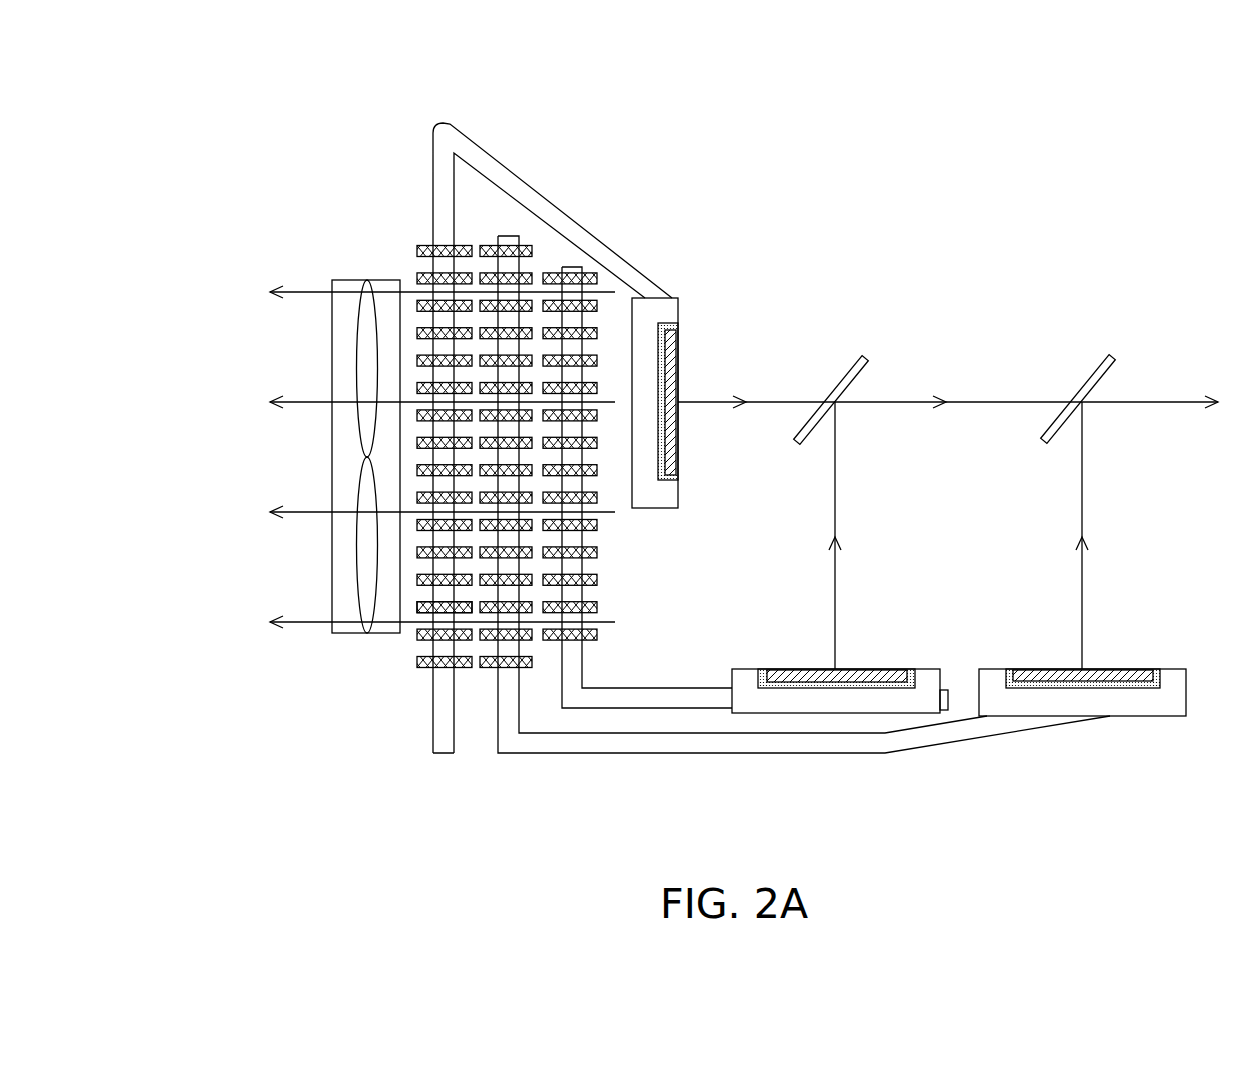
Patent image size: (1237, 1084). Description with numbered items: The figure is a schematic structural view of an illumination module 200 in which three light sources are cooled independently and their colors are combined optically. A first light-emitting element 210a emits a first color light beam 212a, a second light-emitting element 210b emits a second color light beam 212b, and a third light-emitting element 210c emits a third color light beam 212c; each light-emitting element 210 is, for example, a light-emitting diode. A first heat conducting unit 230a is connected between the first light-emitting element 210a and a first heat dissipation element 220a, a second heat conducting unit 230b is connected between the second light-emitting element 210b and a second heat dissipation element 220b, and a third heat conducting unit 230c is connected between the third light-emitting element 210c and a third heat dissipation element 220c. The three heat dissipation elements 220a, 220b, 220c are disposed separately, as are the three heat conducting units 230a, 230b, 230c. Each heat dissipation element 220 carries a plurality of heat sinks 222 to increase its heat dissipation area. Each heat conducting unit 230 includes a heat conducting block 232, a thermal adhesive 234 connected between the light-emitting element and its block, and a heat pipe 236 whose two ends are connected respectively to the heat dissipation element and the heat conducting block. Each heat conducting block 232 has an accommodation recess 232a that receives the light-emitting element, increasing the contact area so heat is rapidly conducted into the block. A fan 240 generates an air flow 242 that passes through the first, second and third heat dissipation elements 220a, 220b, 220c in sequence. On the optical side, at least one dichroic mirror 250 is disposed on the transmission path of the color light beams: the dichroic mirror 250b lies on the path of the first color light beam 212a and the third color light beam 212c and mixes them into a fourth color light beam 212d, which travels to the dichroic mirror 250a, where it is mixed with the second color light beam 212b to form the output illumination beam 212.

The illumination module 200 is at (1220, 838).
The light-emitting element 210 is at (909, 507).
The first light-emitting element 210a is at (790, 672).
The second light-emitting element 210b is at (1043, 675).
The third light-emitting element 210c is at (680, 438).
The illumination beam 212 is at (1172, 400).
The first color light beam 212a is at (837, 578).
The second color light beam 212b is at (1083, 578).
The third color light beam 212c is at (783, 398).
The fourth color light beam 212d is at (920, 406).
The heat dissipation element 220 is at (392, 523).
The first heat dissipation element 220a is at (553, 640).
The second heat dissipation element 220b is at (493, 668).
The third heat dissipation element 220c is at (430, 668).
The heat sink 222 is at (421, 613).
The heat conducting unit 230 is at (771, 486).
The first heat conducting unit 230a is at (755, 558).
The second heat conducting unit 230b is at (550, 764).
The third heat conducting unit 230c is at (598, 205).
The heat conducting block 232 is at (815, 698).
The accommodation recess 232a is at (836, 759).
The thermal adhesive 234 is at (773, 690).
The heat pipe 236 is at (650, 698).
The fan 240 is at (363, 312).
The air flow 242 is at (300, 292).
The dichroic mirror 250 is at (955, 377).
The dichroic mirror 250a is at (1082, 390).
The dichroic mirror 250b is at (903, 345).